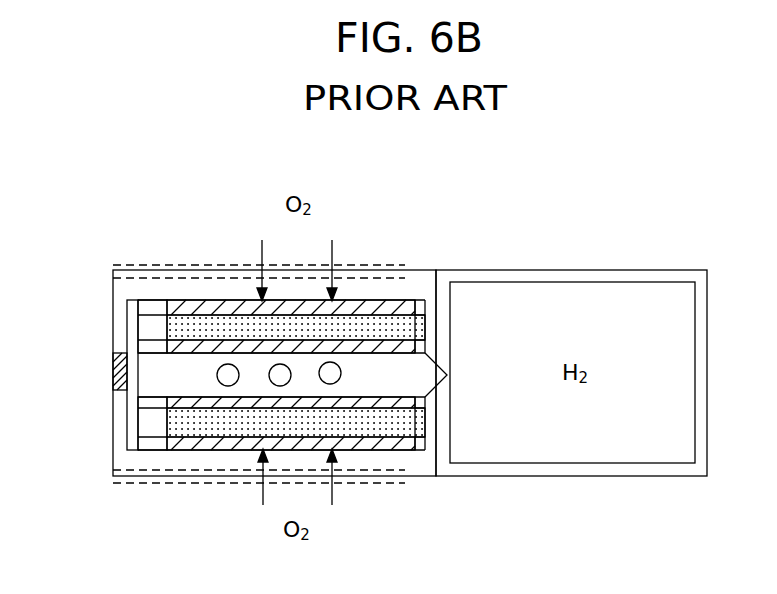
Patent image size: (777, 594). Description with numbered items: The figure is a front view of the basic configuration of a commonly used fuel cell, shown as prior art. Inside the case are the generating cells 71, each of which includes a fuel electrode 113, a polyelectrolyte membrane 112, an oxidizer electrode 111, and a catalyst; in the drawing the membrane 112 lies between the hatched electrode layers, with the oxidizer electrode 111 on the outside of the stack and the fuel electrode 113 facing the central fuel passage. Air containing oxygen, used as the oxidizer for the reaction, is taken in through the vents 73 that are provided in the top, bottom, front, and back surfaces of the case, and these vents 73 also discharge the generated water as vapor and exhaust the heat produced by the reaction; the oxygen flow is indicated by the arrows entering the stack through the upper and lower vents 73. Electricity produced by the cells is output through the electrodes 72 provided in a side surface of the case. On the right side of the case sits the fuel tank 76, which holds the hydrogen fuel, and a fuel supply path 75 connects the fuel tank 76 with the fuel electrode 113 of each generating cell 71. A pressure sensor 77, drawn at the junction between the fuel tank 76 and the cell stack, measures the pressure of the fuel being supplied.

The oxidizer electrode 111 is at (170, 310).
The polyelectrolyte membrane 112 is at (203, 322).
The fuel electrode 113 is at (240, 345).
The generating cell 71 is at (167, 327).
The electrode 72 is at (113, 373).
The vent 73 is at (335, 368).
The fuel supply path 75 is at (433, 418).
The fuel tank 76 is at (617, 292).
The pressure sensor 77 is at (447, 375).